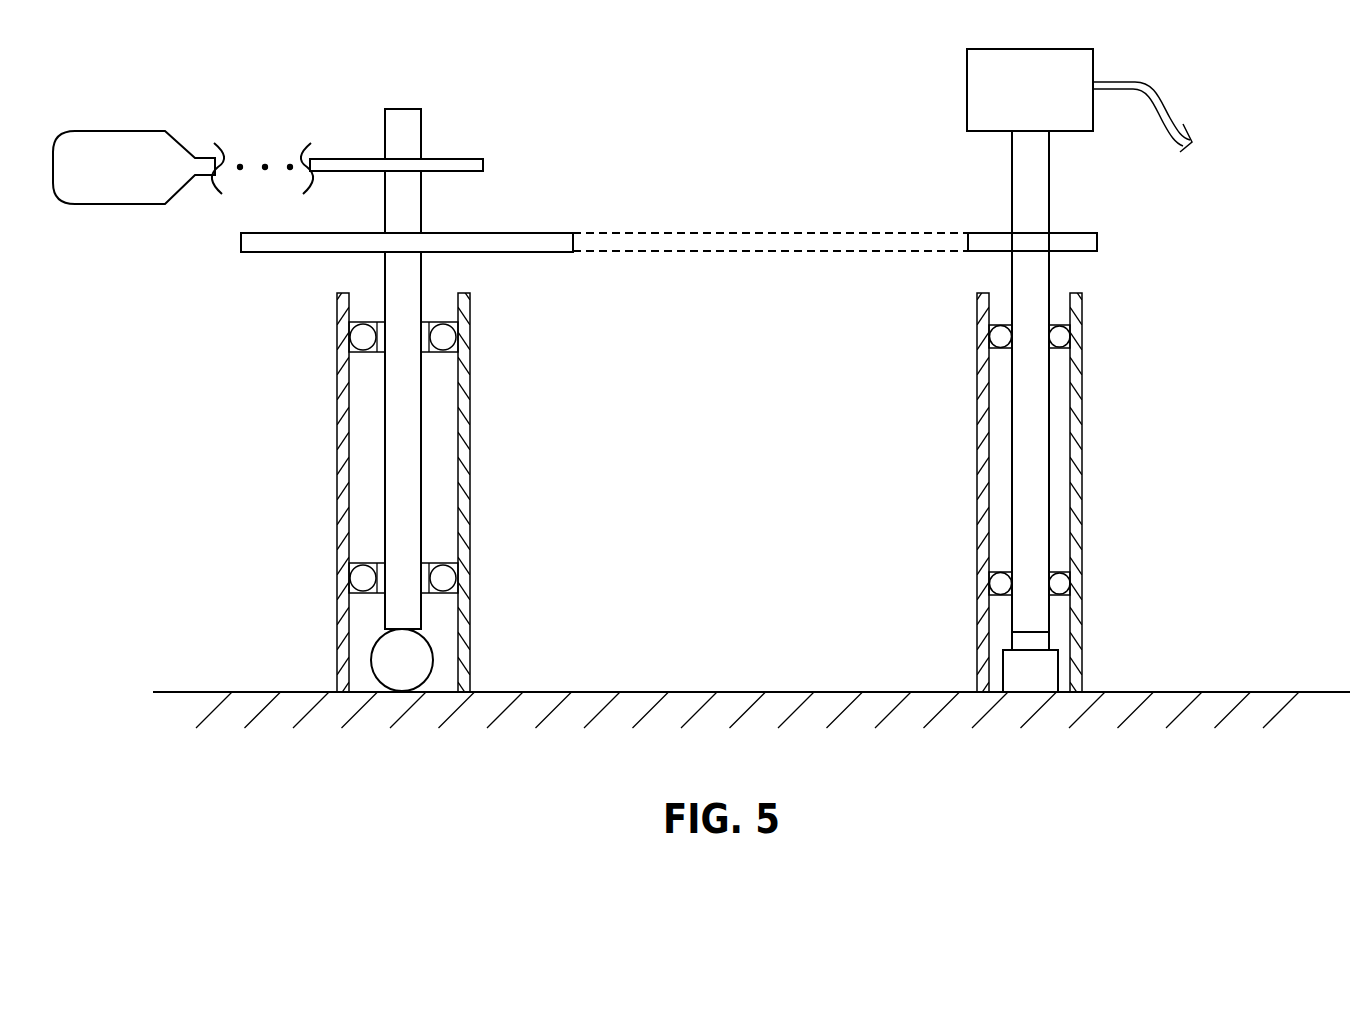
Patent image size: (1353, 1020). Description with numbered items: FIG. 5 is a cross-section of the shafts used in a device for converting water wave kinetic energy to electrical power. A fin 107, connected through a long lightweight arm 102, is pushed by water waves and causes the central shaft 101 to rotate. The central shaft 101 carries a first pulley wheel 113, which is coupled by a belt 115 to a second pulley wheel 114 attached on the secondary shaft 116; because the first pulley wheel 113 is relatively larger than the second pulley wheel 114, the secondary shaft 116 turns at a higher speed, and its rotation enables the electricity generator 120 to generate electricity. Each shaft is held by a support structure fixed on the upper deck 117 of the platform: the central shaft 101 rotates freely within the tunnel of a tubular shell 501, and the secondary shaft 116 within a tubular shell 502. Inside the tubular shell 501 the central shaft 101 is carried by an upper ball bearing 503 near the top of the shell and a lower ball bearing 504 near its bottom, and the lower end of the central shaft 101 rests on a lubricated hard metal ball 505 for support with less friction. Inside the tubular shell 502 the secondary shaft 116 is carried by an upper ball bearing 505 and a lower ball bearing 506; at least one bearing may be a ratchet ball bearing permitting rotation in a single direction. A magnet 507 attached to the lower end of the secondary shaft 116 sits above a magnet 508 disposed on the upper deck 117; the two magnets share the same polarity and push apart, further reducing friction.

The central shaft 101 is at (422, 125).
The arm 102 is at (483, 165).
The fin 107 is at (135, 131).
The first pulley wheel 113 is at (262, 253).
The second pulley wheel 114 is at (1097, 242).
The belt 115 is at (718, 233).
The secondary shaft 116 is at (1049, 176).
The upper deck 117 is at (695, 692).
The electricity generator 120 is at (1048, 94).
The tubular shell 501 is at (470, 478).
The tubular shell 502 is at (1082, 500).
The upper ball bearing 503 is at (445, 337).
The lower ball bearing 504 is at (445, 578).
The lubricated hard metal ball / upper ball bearing 505 is at (388, 655).
The lower ball bearing 506 is at (1060, 583).
The magnet 507 is at (1045, 640).
The magnet 508 is at (1053, 671).